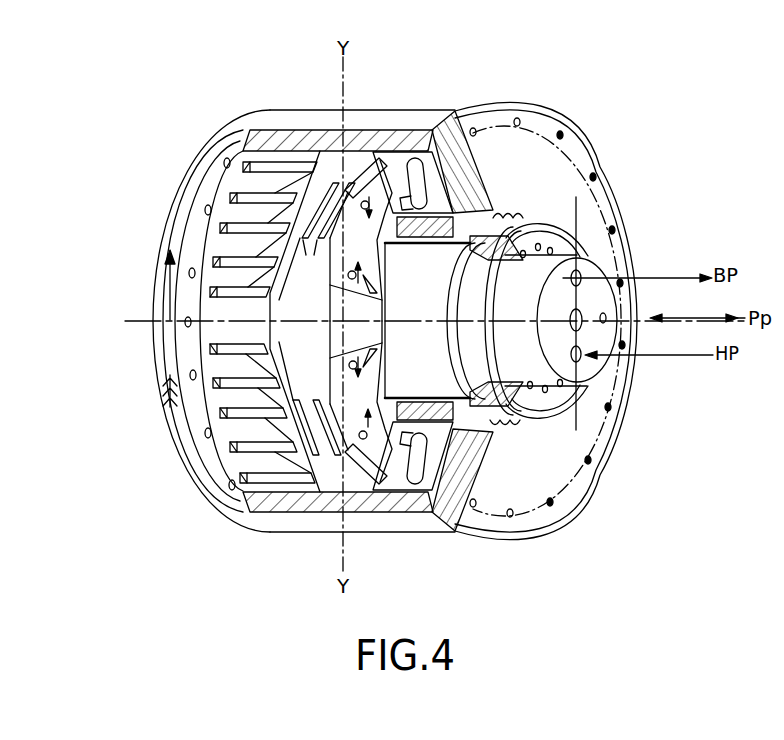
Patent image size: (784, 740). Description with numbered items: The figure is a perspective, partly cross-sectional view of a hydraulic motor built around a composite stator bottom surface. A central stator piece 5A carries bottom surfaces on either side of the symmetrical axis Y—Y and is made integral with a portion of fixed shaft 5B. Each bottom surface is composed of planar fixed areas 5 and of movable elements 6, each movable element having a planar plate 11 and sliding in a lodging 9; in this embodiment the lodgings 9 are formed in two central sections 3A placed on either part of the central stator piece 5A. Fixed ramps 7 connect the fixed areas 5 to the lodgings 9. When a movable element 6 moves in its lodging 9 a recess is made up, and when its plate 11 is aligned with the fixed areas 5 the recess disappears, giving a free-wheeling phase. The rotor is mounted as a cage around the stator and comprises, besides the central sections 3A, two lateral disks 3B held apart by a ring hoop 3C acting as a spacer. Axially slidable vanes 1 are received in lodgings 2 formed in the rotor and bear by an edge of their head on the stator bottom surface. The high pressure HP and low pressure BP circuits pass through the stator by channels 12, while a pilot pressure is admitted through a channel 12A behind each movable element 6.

The axially slidable vane 1 is at (285, 170).
The lodging 2 is at (443, 151).
The central section 3A is at (241, 183).
The lateral disk 3B is at (203, 157).
The ring hoop 3C is at (410, 128).
The fixed area 5 is at (360, 316).
The central stator piece 5A is at (327, 363).
The fixed shaft portion 5B is at (455, 236).
The movable element 6 is at (349, 183).
The fixed ramp 7 is at (360, 170).
The lodging 9 is at (310, 258).
The plate 11 is at (381, 230).
The channel 12 is at (577, 275).
The pilot pressure channel 12A is at (606, 320).